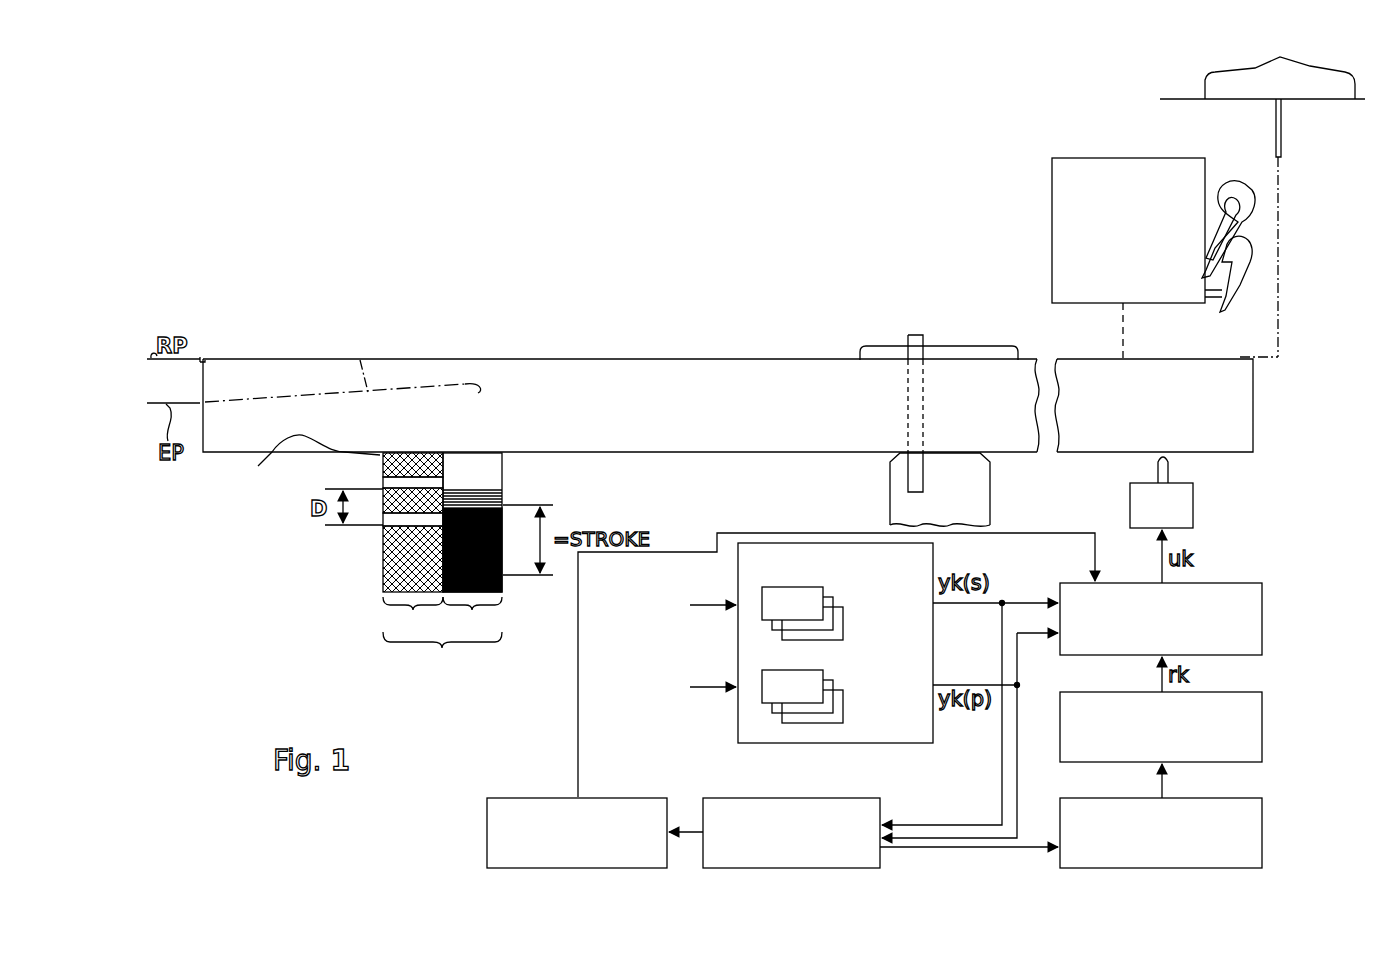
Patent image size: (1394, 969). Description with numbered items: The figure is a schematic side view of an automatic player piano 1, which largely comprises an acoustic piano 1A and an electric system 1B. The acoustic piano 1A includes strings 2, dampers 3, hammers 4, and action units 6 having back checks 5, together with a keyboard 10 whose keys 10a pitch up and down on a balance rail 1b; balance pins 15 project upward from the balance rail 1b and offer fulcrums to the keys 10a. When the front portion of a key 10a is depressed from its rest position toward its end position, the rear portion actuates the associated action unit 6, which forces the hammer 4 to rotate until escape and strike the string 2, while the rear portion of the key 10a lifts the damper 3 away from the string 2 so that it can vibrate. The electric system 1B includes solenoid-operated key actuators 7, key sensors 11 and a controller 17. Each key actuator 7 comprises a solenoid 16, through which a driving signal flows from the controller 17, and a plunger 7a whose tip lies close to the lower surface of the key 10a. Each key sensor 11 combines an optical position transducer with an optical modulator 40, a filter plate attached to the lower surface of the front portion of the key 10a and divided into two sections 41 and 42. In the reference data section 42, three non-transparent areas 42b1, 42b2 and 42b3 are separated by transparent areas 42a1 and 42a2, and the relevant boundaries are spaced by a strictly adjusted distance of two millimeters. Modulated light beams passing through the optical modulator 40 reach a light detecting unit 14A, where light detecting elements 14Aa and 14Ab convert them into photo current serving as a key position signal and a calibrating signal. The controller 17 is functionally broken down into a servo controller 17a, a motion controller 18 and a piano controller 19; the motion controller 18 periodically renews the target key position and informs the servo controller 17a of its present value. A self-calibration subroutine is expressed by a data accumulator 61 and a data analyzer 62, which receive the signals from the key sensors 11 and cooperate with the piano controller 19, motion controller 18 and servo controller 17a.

The automatic player piano 1 is at (718, 180).
The acoustic piano 1A is at (285, 292).
The electric system 1B is at (1279, 528).
The balance rail 1b is at (890, 500).
The strings 2 is at (1170, 98).
The dampers 3 is at (1230, 82).
The hammers 4 is at (1252, 196).
The back checks 5 is at (1250, 258).
The action units 6 is at (1080, 158).
The solenoid-operated key actuator 7 is at (1170, 492).
The plunger 7a is at (1170, 465).
The keyboard 10 is at (669, 356).
The key 10a is at (357, 357).
The key sensor 11 is at (337, 554).
The light detecting unit 14A is at (790, 677).
The light detecting element 14Aa is at (770, 598).
The light detecting element 14Ab is at (770, 700).
The balance pin 15 is at (917, 334).
The solenoid 16 is at (1193, 485).
The controller 17 is at (1199, 698).
The servo controller 17a is at (1262, 620).
The motion controller 18 is at (1262, 725).
The piano controller 19 is at (1262, 831).
The optical modulator 40 is at (358, 554).
The section 41 is at (472, 544).
The reference data section 42 is at (329, 535).
The transparent area 42a1 is at (383, 547).
The transparent area 42a2 is at (383, 477).
The non-transparent area 42b1 is at (383, 582).
The non-transparent area 42b2 is at (383, 508).
The non-transparent area 42b3 is at (297, 459).
The data accumulator 61 is at (773, 798).
The data analyzer 62 is at (595, 798).